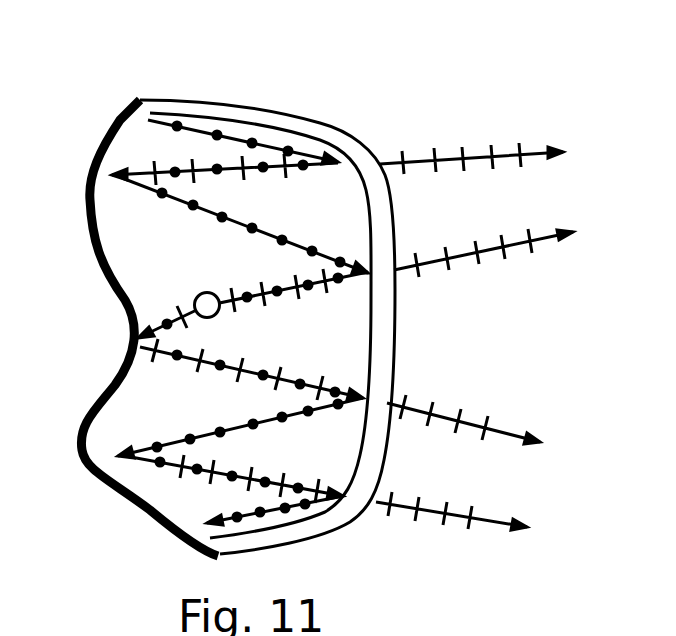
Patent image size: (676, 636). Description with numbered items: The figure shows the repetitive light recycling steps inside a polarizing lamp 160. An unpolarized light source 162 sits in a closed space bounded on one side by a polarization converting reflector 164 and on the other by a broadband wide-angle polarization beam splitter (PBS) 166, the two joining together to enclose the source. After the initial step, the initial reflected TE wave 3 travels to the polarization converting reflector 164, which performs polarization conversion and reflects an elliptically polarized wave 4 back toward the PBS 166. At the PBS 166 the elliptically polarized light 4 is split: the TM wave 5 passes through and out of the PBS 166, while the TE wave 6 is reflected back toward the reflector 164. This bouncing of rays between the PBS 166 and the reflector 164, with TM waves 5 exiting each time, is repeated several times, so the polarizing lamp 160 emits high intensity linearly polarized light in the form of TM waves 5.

The polarizing lamp 160 is at (480, 68).
The light source 162 is at (213, 291).
The reflector 164 is at (120, 120).
The polarization beam splitter 166 is at (394, 346).
The initial reflected TE wave 3 is at (243, 318).
The elliptically polarized wave 4 is at (231, 311).
The TM wave 5 is at (474, 339).
The TE wave 6 is at (227, 333).